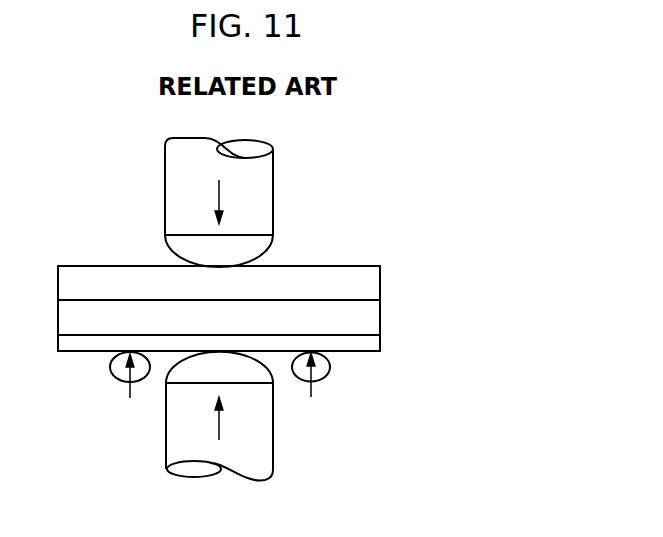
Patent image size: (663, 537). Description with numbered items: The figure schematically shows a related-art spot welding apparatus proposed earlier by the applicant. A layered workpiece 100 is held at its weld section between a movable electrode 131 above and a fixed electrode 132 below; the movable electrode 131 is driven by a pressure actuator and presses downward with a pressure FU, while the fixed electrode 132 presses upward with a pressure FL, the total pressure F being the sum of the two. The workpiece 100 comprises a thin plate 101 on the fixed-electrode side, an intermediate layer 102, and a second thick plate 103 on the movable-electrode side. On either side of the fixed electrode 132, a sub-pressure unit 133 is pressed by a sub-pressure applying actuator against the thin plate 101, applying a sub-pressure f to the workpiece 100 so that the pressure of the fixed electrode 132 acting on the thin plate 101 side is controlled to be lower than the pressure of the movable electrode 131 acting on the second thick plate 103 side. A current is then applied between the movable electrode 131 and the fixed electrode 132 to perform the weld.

The workpiece 100 is at (267, 269).
The thin plate 101 is at (385, 340).
The second layer 102 is at (385, 314).
The second thick plate 103 is at (385, 280).
The movable electrode 131 is at (263, 170).
The fixed electrode 132 is at (263, 453).
The sub-pressure unit 133 is at (112, 364).